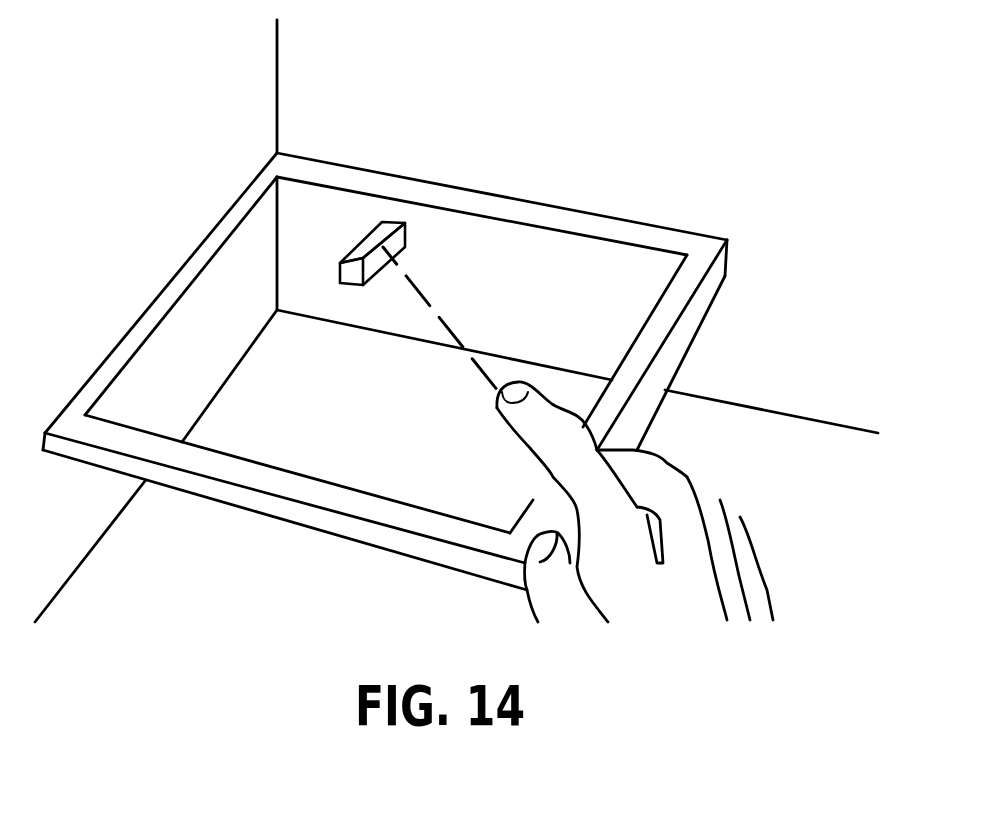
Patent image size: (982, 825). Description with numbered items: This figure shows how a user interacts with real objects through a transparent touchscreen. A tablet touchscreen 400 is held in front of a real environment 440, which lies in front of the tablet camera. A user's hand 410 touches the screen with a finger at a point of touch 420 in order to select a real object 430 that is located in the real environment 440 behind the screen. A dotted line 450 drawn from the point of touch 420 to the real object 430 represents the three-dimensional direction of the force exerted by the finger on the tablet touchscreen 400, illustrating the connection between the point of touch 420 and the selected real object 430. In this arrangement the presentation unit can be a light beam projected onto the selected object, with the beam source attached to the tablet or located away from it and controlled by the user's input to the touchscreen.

The tablet touchscreen 400 is at (150, 303).
The user's hand 410 is at (668, 462).
The point of touch 420 is at (497, 391).
The real object 430 is at (392, 222).
The real environment 440 is at (277, 72).
The dotted line 450 is at (440, 320).